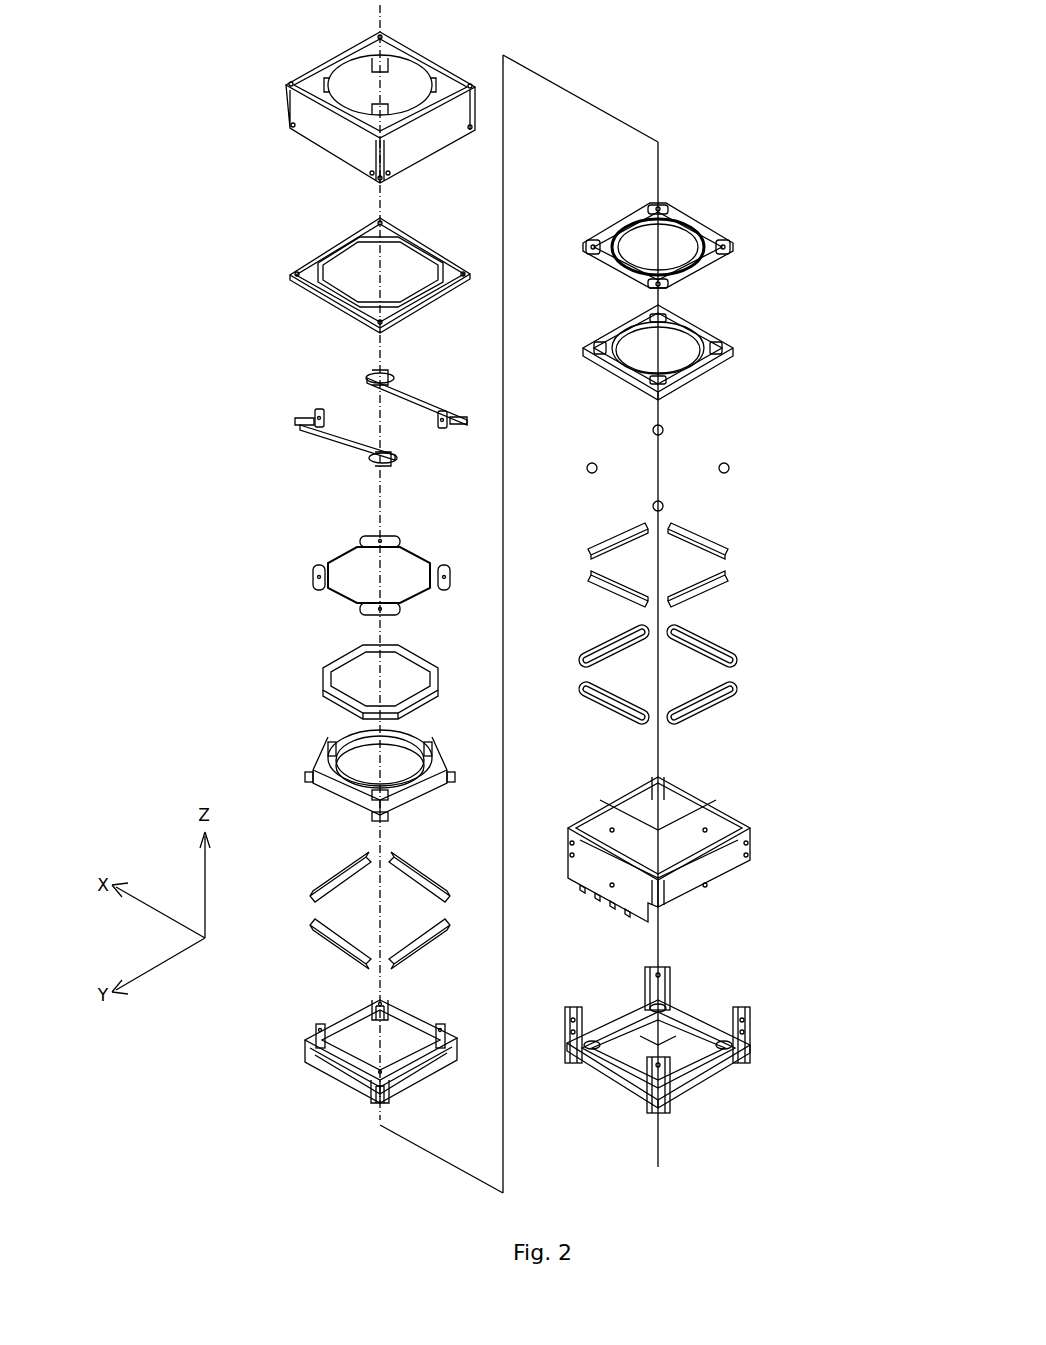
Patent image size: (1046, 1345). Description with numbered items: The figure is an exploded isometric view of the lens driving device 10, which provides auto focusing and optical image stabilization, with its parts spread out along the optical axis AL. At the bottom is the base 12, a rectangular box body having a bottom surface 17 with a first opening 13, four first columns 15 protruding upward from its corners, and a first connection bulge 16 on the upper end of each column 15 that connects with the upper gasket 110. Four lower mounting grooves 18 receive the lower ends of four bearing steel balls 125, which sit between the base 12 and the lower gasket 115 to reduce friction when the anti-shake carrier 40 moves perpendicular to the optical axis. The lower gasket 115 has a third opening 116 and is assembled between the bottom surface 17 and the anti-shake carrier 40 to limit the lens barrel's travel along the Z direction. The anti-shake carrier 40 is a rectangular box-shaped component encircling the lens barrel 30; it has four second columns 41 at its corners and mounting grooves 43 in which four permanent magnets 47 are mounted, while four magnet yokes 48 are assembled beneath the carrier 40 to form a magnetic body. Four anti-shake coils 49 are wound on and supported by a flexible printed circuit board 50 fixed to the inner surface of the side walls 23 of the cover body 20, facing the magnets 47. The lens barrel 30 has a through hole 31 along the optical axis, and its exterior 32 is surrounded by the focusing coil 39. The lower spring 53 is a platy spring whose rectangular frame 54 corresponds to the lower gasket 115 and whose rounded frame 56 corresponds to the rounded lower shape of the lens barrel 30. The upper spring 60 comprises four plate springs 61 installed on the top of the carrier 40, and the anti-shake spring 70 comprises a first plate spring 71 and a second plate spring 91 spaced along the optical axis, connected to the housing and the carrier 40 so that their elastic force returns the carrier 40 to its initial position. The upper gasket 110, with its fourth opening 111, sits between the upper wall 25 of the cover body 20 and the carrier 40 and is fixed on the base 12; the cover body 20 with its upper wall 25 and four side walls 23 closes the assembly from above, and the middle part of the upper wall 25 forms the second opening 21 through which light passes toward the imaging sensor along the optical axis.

The lens driving device 10 is at (663, 62).
The base 12 is at (672, 1036).
The first opening 13 is at (647, 1040).
The first column 15 is at (660, 970).
The first connection bulge 16 is at (658, 963).
The bottom surface 17 is at (627, 1023).
The lower mounting groove 18 is at (667, 1003).
The cover body 20 is at (356, 110).
The cover opening 21 is at (368, 92).
The side wall 23 is at (332, 137).
The upper wall 25 is at (443, 78).
The lens barrel 30 is at (335, 774).
The through hole 31 is at (390, 760).
The exterior 32 is at (347, 790).
The focusing coil 39 is at (322, 675).
The anti-shake carrier 40 is at (367, 1076).
The second column 41 is at (303, 1048).
The mounting groove 43 is at (343, 1027).
The permanent magnet 47 is at (332, 888).
The magnet yoke 48 is at (620, 537).
The anti-shake coil 49 is at (598, 655).
The flexible printed circuit board 50 is at (757, 840).
The lower spring 53 is at (675, 212).
The rectangular frame 54 is at (620, 220).
The rounded frame 56 is at (628, 267).
The upper spring 60 is at (341, 573).
The plate spring 61 is at (338, 548).
The anti-shake spring 70 is at (362, 409).
The first plate spring 71 is at (315, 442).
The second plate spring 91 is at (411, 402).
The upper gasket 110 is at (351, 277).
The fourth opening 111 is at (402, 275).
The lower gasket 115 is at (677, 329).
The third opening 116 is at (640, 334).
The bearing steel ball 125 is at (590, 463).
The optical axis AL is at (660, 157).